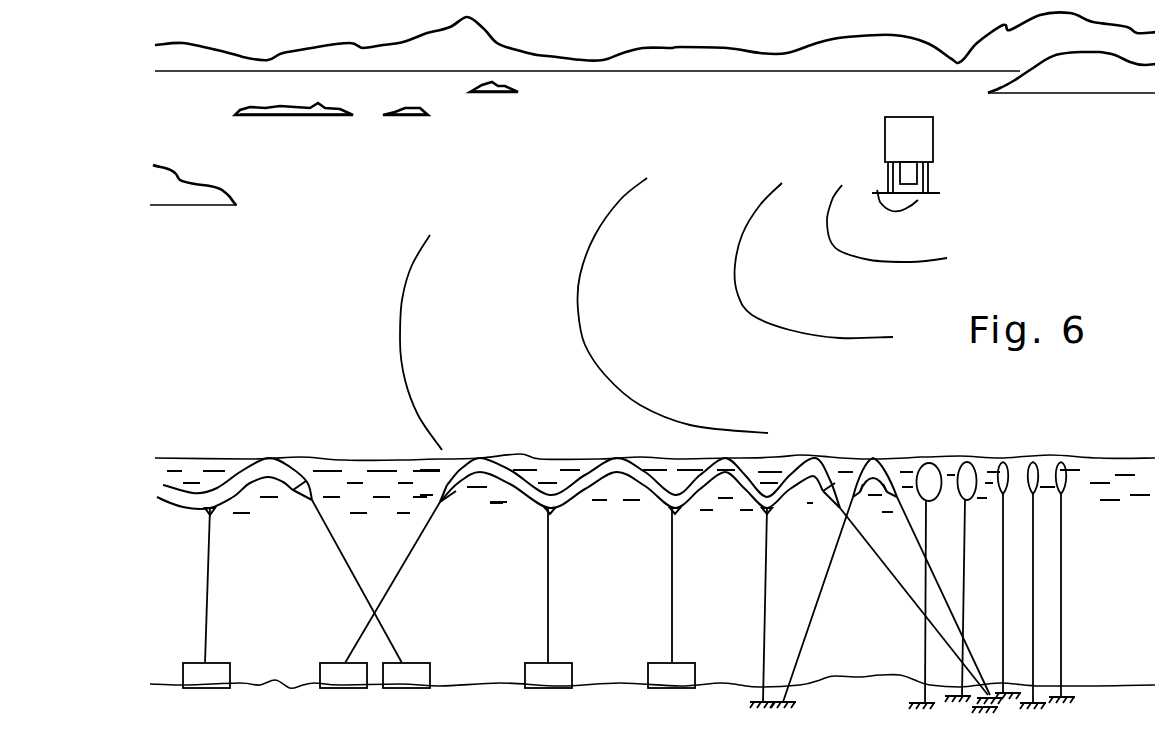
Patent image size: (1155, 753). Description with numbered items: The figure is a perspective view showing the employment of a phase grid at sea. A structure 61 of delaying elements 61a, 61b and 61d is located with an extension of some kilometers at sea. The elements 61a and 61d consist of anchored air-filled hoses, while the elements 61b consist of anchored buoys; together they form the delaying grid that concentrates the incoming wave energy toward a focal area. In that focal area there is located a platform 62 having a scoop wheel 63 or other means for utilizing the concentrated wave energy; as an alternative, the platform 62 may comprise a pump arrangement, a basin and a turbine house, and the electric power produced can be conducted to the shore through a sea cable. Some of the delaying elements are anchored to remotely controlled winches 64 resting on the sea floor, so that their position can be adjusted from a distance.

The structure of delaying elements 61 is at (825, 450).
The delaying element 61a is at (266, 467).
The delaying element 61b is at (938, 461).
The delaying element 61d is at (880, 458).
The platform 62 is at (926, 148).
The scoop wheel 63 is at (905, 173).
The remotely controlled winch 64 is at (439, 675).